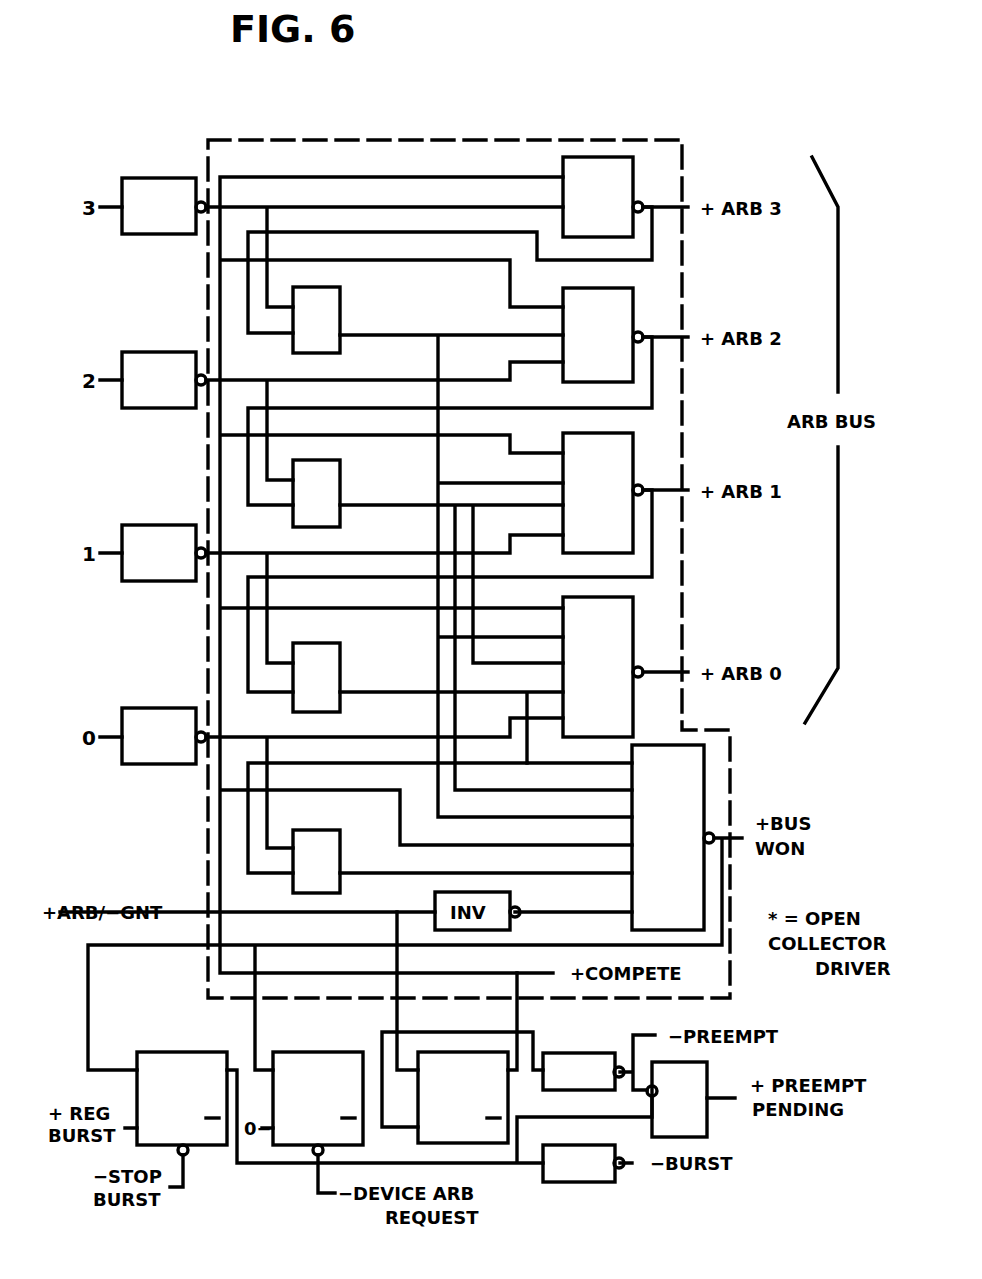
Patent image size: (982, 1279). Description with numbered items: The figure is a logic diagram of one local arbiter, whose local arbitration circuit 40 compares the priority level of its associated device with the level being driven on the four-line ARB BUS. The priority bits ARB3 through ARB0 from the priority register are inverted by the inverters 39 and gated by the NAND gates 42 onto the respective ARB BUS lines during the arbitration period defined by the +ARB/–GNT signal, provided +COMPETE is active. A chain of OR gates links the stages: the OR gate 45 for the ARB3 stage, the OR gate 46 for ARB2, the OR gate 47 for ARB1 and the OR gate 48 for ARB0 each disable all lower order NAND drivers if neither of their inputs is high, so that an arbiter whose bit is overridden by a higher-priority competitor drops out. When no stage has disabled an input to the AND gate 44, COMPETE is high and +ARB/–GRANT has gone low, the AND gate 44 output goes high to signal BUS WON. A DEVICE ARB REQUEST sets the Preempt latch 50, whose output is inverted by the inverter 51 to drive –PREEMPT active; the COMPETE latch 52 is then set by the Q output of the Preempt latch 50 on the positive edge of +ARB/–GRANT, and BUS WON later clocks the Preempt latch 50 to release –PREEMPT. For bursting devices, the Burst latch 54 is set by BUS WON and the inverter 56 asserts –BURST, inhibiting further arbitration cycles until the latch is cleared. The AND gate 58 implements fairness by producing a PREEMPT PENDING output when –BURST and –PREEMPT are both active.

The inverters 39 is at (158, 178).
The local arbitration circuit 40 is at (683, 175).
The NAND gates 42 is at (634, 168).
The AND gate 44 is at (704, 790).
The OR gate 45 is at (340, 300).
The OR gate 46 is at (340, 470).
The OR gate 47 is at (340, 652).
The OR gate 48 is at (340, 845).
The Preempt latch 50 is at (340, 1050).
The inverter 51 is at (575, 1053).
The COMPETE latch 52 is at (460, 1143).
The Burst latch 54 is at (185, 1052).
The inverter 56 is at (590, 1182).
The AND gate 58 is at (707, 1078).